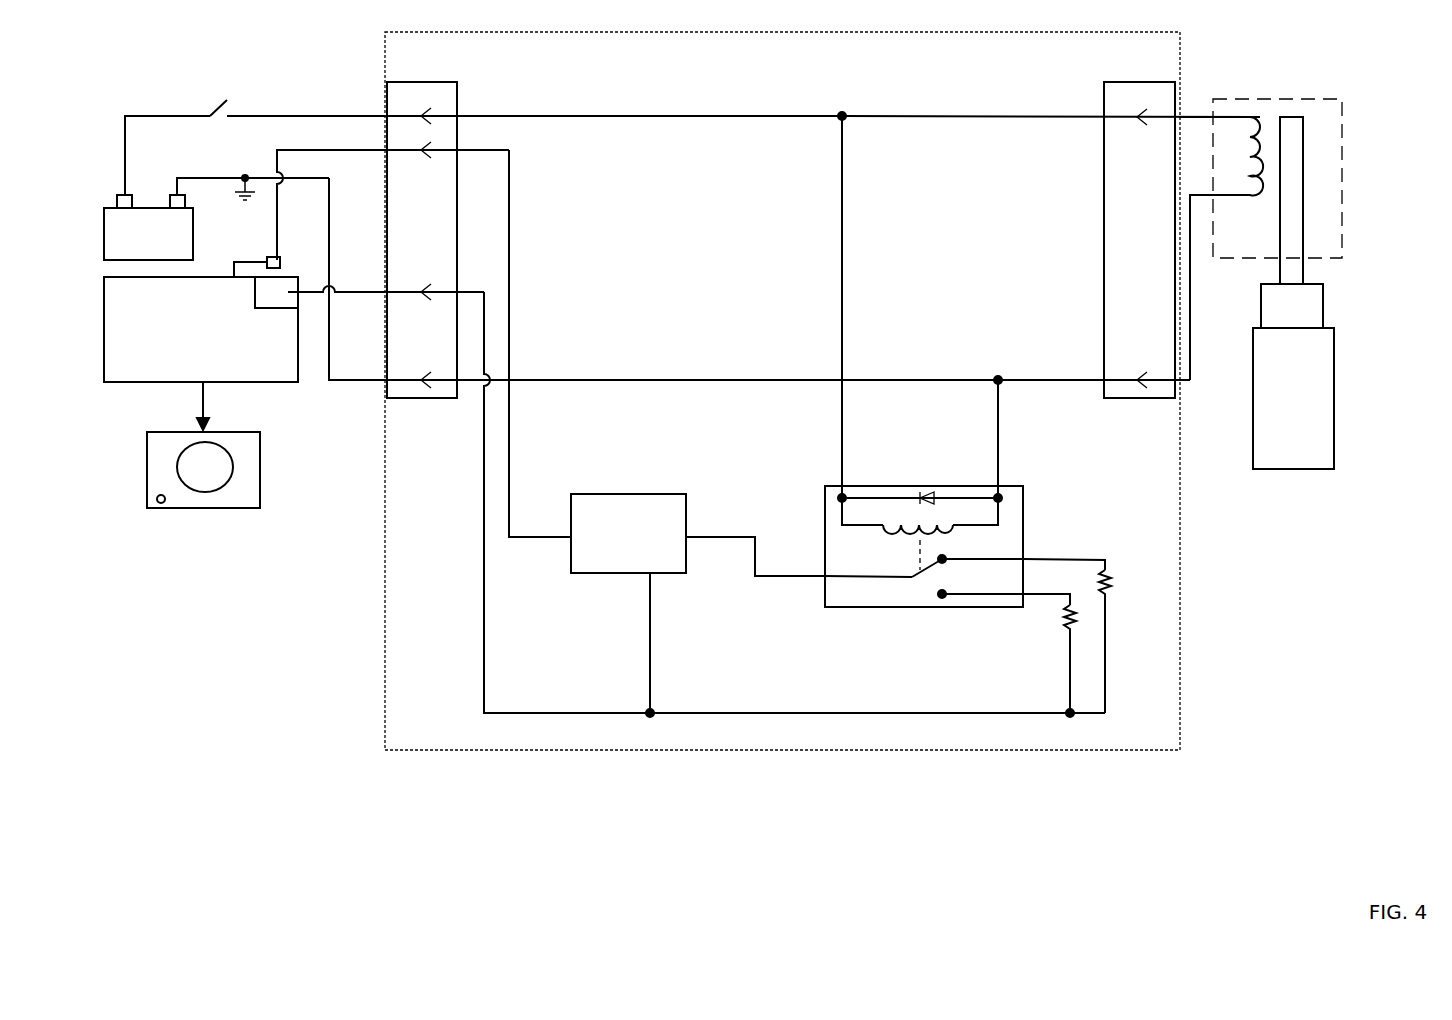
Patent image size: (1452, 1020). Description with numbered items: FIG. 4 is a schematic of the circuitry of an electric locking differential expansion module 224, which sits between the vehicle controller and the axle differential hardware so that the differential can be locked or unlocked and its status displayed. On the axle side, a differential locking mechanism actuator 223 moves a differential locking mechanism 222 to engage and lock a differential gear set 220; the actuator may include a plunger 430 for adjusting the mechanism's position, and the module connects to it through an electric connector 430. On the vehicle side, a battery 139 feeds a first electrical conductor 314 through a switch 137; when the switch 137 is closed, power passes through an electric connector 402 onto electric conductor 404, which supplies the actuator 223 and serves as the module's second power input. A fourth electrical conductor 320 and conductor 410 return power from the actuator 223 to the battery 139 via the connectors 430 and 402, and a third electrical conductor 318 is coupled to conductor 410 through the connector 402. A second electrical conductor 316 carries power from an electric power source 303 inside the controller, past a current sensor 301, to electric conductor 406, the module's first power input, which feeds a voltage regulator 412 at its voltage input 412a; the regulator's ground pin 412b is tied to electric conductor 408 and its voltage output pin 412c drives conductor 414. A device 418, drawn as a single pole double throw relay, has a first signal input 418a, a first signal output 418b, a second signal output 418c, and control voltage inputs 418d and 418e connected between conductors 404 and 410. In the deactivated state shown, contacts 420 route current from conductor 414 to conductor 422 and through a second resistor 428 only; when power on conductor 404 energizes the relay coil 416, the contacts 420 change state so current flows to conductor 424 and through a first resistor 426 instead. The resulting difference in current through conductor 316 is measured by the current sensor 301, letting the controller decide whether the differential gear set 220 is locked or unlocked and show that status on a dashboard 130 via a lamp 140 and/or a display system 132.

The dashboard 130 is at (147, 452).
The display system 132 is at (205, 467).
The switch 137 is at (228, 100).
The battery 139 is at (216, 217).
The lamp 140 is at (159, 503).
The differential gear set 220 is at (1293, 398).
The differential locking mechanism 222 is at (1292, 306).
The differential locking mechanism actuator 223 is at (1323, 99).
The electric locking differential expansion module 224 is at (720, 750).
The current sensor 301 is at (268, 258).
The electric power source 303 is at (265, 288).
The first electrical conductor 314 is at (350, 115).
The second electrical conductor 316 is at (375, 153).
The third electrical conductor 318 is at (378, 291).
The fourth electrical conductor 320 is at (378, 379).
The electric connector 402 is at (441, 82).
The electric conductor 404 is at (718, 116).
The electric conductor 406 is at (510, 208).
The electric conductor 408 is at (483, 482).
The conductor 410 is at (743, 379).
The voltage regulator 412 is at (628, 533).
The voltage input 412a is at (571, 540).
The ground pin 412b is at (645, 573).
The voltage output pin 412c is at (686, 543).
The conductor 414 is at (745, 537).
The relay coil 416 is at (875, 520).
The device 418 is at (928, 486).
The first signal input 418a is at (822, 577).
The first signal output 418b is at (1020, 595).
The second signal output 418c is at (1022, 560).
The control voltage input 418d is at (835, 490).
The control voltage input 418e is at (1003, 488).
The contacts 420 is at (908, 582).
The conductor 422 is at (1075, 560).
The conductor 424 is at (1055, 595).
The first resistor 426 is at (1065, 620).
The second resistor 428 is at (1108, 573).
The electric connector 430 is at (1133, 82).